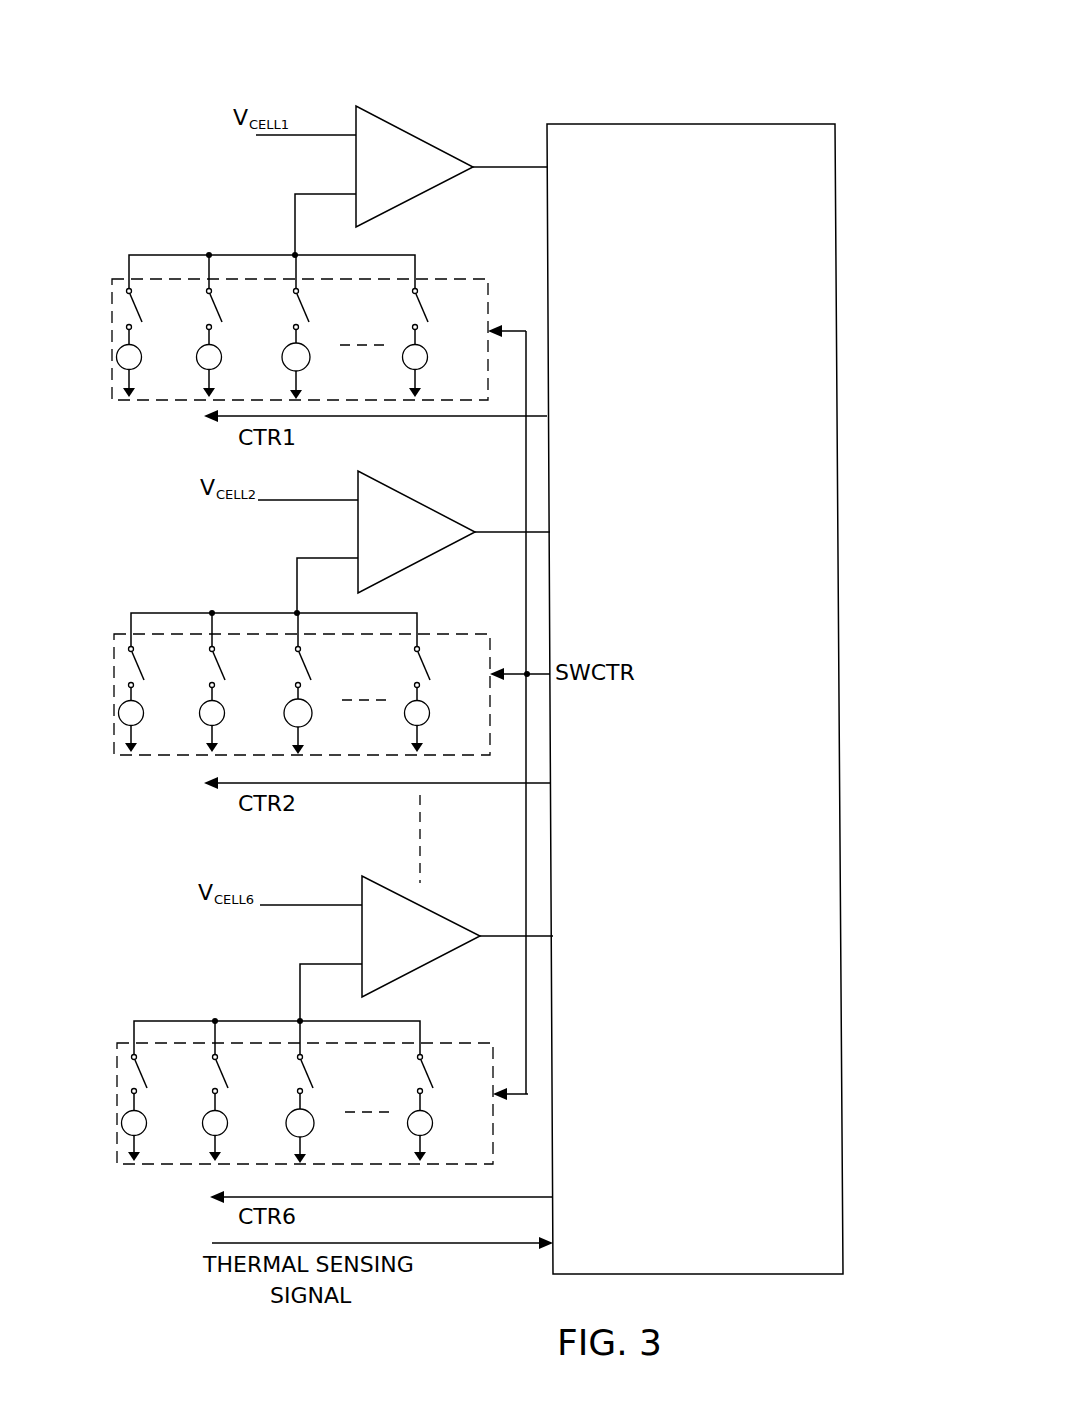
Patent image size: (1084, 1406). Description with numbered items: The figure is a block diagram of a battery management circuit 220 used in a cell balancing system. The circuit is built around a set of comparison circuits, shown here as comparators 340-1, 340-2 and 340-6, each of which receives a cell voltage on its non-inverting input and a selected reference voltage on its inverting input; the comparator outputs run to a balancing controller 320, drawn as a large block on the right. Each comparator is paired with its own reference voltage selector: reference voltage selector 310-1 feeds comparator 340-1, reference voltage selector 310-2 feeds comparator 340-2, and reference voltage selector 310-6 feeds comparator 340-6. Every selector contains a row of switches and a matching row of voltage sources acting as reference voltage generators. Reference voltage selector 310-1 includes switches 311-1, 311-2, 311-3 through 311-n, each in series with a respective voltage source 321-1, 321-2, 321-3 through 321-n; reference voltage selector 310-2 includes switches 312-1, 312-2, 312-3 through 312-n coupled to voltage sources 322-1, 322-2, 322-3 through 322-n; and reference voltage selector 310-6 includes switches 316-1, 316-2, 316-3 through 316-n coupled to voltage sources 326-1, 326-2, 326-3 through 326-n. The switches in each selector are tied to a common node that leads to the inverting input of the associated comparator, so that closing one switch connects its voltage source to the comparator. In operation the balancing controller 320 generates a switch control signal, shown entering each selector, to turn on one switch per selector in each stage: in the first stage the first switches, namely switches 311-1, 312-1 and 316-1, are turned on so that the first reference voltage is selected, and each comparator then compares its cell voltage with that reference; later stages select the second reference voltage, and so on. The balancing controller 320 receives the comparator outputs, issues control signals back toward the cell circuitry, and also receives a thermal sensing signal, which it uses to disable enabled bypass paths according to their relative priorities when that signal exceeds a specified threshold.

The battery management circuit 220 is at (318, 86).
The balancing controller 320 is at (760, 125).
The comparator 340-1 is at (405, 125).
The comparator 340-2 is at (407, 490).
The comparator 340-6 is at (418, 906).
The reference voltage selector 310-1 is at (462, 279).
The reference voltage selector 310-2 is at (464, 634).
The reference voltage selector 310-6 is at (463, 1043).
The switch 311-1 is at (135, 299).
The switch 311-2 is at (215, 299).
The switch 311-3 is at (302, 299).
The switch 311-n is at (421, 299).
The voltage source 321-1 is at (141, 355).
The voltage source 321-2 is at (221, 355).
The voltage source 321-3 is at (310, 355).
The voltage source 321-n is at (427, 352).
The switch 312-1 is at (137, 657).
The switch 312-2 is at (218, 657).
The switch 312-3 is at (304, 657).
The switch 312-n is at (423, 657).
The voltage source 322-1 is at (143, 711).
The voltage source 322-2 is at (224, 711).
The voltage source 322-3 is at (312, 711).
The voltage source 322-n is at (429, 708).
The switch 316-1 is at (140, 1064).
The switch 316-2 is at (221, 1064).
The switch 316-3 is at (306, 1064).
The switch 316-n is at (426, 1064).
The voltage source 326-1 is at (146, 1121).
The voltage source 326-2 is at (227, 1121).
The voltage source 326-3 is at (314, 1121).
The voltage source 326-n is at (432, 1118).